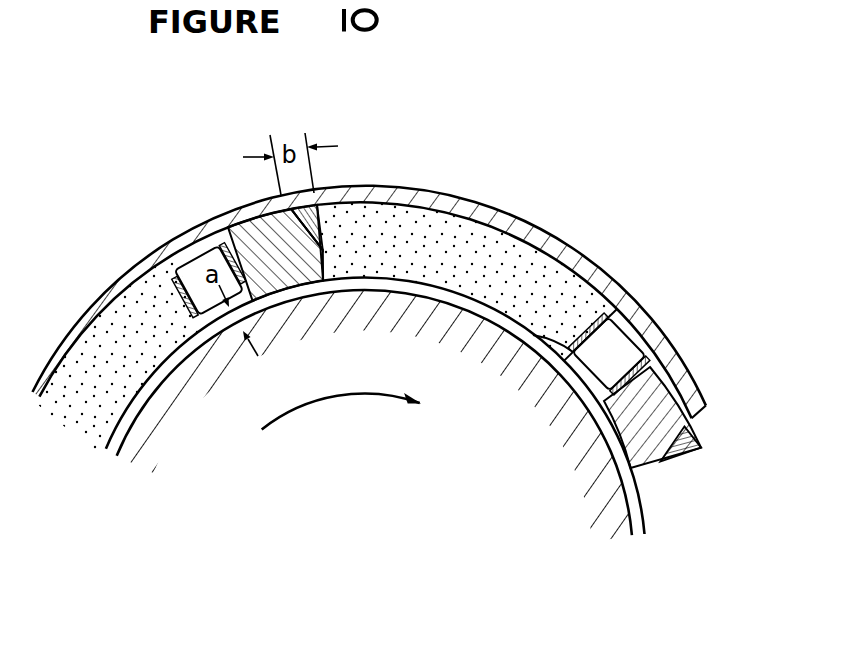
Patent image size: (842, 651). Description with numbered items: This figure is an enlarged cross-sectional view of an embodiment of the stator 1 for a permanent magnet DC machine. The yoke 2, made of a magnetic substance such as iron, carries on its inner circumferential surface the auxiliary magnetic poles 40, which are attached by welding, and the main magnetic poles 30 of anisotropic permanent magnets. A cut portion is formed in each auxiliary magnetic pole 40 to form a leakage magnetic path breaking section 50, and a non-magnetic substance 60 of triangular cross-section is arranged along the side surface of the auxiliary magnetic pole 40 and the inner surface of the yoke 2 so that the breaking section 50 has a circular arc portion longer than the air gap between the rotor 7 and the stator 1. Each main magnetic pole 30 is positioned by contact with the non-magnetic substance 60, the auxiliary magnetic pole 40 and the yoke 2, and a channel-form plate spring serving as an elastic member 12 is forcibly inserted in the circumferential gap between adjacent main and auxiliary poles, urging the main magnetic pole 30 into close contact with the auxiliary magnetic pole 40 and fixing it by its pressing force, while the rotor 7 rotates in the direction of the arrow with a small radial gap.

The stator 1 is at (401, 190).
The yoke 2 is at (477, 196).
The rotor 7 is at (590, 284).
The elastic member 12 is at (213, 322).
The main magnetic pole 30 is at (122, 322).
The auxiliary magnetic pole 40 is at (247, 250).
The leakage magnetic path breaking section 50 is at (299, 233).
The non-magnetic substance 60 is at (303, 223).